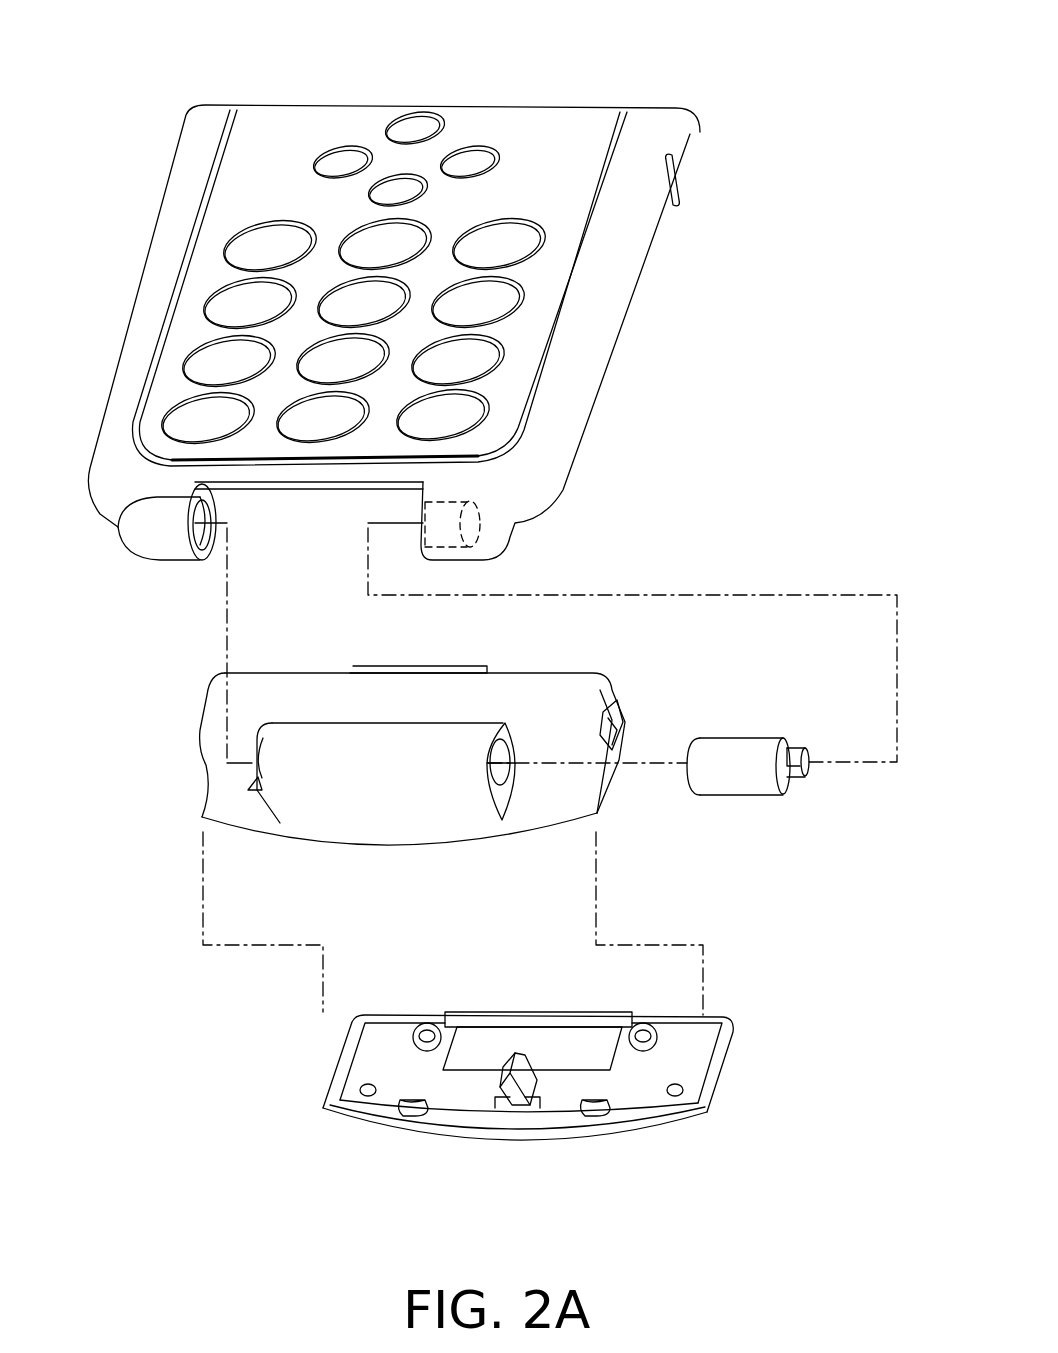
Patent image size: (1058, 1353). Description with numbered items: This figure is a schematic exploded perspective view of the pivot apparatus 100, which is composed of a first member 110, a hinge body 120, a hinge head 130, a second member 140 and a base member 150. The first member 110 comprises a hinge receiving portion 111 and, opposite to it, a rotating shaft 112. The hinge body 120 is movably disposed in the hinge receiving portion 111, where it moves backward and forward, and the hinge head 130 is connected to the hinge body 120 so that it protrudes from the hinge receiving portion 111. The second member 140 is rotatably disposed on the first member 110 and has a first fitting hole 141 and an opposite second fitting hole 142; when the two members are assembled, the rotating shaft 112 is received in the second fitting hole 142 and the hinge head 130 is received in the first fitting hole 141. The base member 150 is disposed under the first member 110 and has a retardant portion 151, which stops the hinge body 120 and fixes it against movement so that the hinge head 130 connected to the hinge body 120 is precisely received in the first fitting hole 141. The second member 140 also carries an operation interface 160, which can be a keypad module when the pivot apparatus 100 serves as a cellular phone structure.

The pivot apparatus 100 is at (141, 37).
The first member 110 is at (203, 780).
The hinge receiving portion 111 is at (505, 745).
The rotating shaft 112 is at (257, 752).
The hinge body 120 is at (738, 738).
The hinge head 130 is at (793, 778).
The second member 140 is at (636, 292).
The first fitting hole 141 is at (450, 500).
The second fitting hole 142 is at (210, 560).
The base member 150 is at (370, 1123).
The retardant portion 151 is at (509, 1053).
The operation interface 160 is at (582, 180).